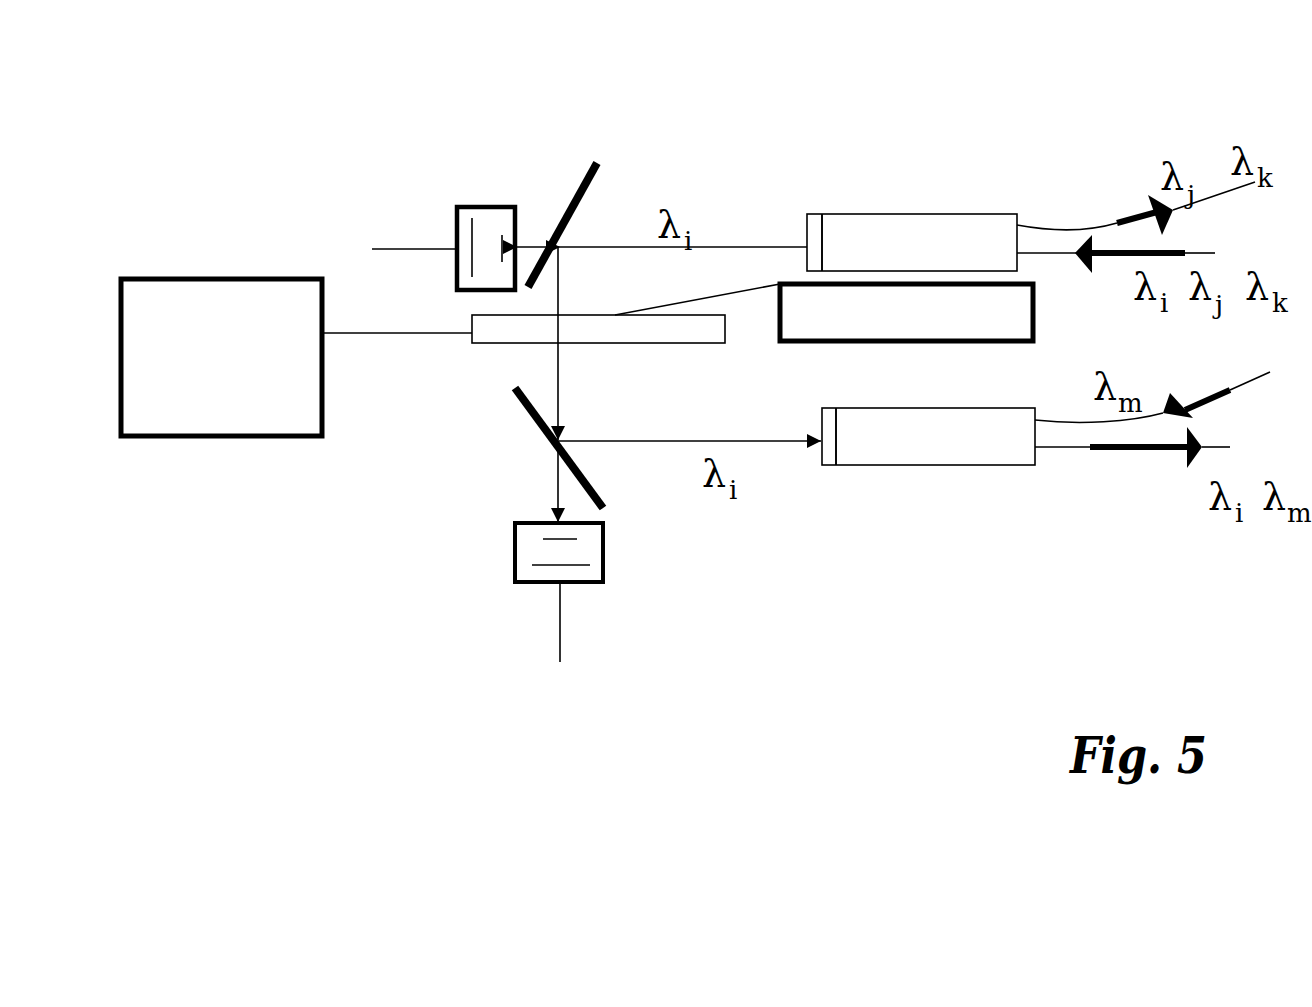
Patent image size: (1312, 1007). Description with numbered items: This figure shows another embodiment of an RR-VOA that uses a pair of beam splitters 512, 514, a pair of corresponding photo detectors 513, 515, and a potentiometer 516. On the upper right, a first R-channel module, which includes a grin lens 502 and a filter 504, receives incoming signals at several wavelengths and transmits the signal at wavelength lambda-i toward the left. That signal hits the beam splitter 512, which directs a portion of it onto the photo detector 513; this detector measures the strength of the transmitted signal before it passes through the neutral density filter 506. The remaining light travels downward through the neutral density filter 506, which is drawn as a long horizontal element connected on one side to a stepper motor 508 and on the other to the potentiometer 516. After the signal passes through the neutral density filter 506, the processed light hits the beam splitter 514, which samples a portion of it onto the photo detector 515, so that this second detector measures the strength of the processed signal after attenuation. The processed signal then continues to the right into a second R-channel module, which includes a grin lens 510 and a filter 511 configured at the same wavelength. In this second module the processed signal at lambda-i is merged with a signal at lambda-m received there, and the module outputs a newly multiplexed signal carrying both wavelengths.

The grin lens 502 is at (1031, 221).
The filter 504 is at (824, 211).
The neutral density filter 506 is at (598, 364).
The stepper motor 508 is at (296, 357).
The grin lens 510 is at (1046, 416).
The filter 511 is at (827, 465).
The beam splitter 512 is at (639, 203).
The photo detector 513 is at (398, 228).
The beam splitter 514 is at (492, 448).
The photo detector 515 is at (626, 594).
The potentiometer 516 is at (1020, 322).